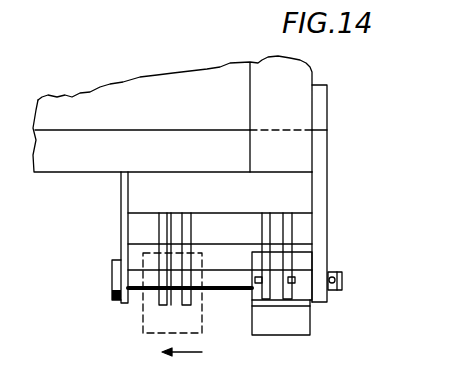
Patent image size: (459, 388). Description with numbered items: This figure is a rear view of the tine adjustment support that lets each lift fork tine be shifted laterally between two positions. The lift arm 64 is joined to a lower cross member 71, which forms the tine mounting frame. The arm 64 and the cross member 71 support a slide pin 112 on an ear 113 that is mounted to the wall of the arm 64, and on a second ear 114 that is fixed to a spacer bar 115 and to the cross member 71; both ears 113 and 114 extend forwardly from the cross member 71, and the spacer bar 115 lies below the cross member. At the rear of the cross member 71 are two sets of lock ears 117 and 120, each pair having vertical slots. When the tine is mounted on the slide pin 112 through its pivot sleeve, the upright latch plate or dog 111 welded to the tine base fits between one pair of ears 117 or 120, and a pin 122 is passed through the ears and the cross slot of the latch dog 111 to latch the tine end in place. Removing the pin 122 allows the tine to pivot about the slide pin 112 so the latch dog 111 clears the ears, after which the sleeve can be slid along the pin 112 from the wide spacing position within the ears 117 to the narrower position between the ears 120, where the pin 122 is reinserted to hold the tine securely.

The arm 64 is at (292, 105).
The lower cross member 71 is at (62, 173).
The latch plate 111 is at (278, 290).
The slide pin 112 is at (343, 284).
The ear 113 is at (321, 232).
The ear 114 is at (124, 200).
The spacer bar 115 is at (213, 190).
The lock ears 117 is at (262, 258).
The lock ears 120 is at (182, 302).
The pin 122 is at (257, 283).